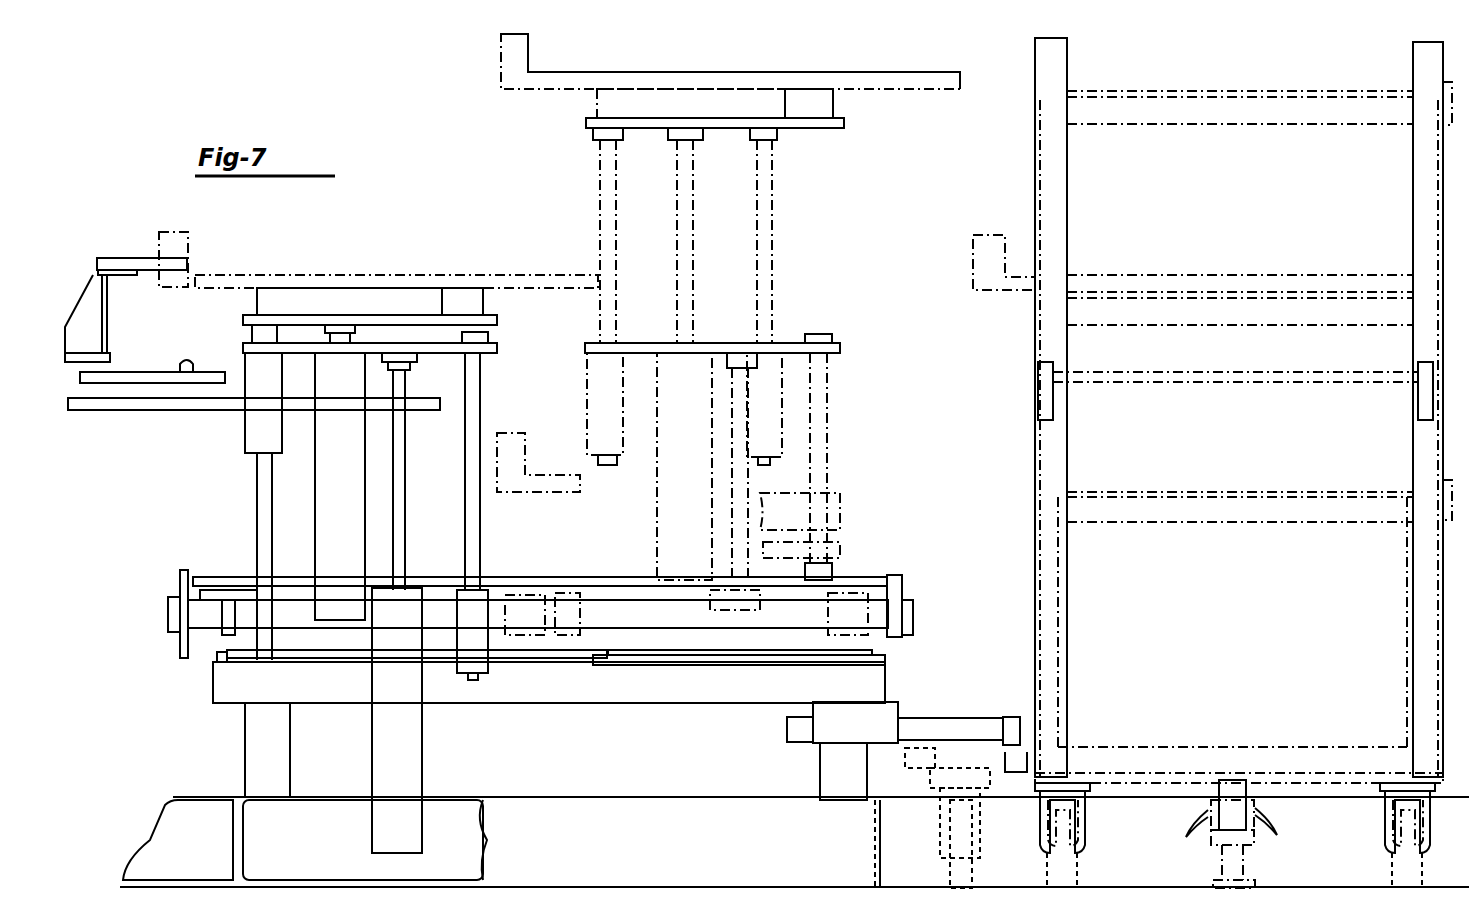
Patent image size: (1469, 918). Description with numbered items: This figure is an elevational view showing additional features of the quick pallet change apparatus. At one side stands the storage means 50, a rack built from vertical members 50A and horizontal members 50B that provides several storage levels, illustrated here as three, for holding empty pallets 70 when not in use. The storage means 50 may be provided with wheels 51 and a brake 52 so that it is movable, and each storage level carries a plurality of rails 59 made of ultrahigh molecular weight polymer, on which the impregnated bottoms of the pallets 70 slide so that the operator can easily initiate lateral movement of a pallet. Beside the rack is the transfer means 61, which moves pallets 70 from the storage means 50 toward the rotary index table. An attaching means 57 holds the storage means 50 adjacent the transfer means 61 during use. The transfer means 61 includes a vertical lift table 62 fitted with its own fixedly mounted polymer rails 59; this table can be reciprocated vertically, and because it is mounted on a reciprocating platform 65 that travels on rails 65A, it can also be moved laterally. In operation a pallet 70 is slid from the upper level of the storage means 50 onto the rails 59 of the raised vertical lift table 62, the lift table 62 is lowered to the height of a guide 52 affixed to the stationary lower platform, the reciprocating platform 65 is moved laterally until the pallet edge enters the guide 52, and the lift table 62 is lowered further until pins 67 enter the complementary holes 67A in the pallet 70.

The storage means 50 is at (1243, 399).
The vertical members 50A is at (1062, 632).
The horizontal members 50B is at (1275, 124).
The wheels 51 is at (1088, 836).
The brake 52 is at (118, 260).
The attaching means 57 is at (942, 712).
The rails 59 is at (596, 100).
The transfer means 61 is at (284, 230).
The vertical lift table 62 is at (853, 126).
The reciprocating platform 65 is at (858, 572).
The rails 65A is at (715, 623).
The pins 67 is at (188, 360).
The holes 67A is at (190, 270).
The pallet 70 is at (385, 277).